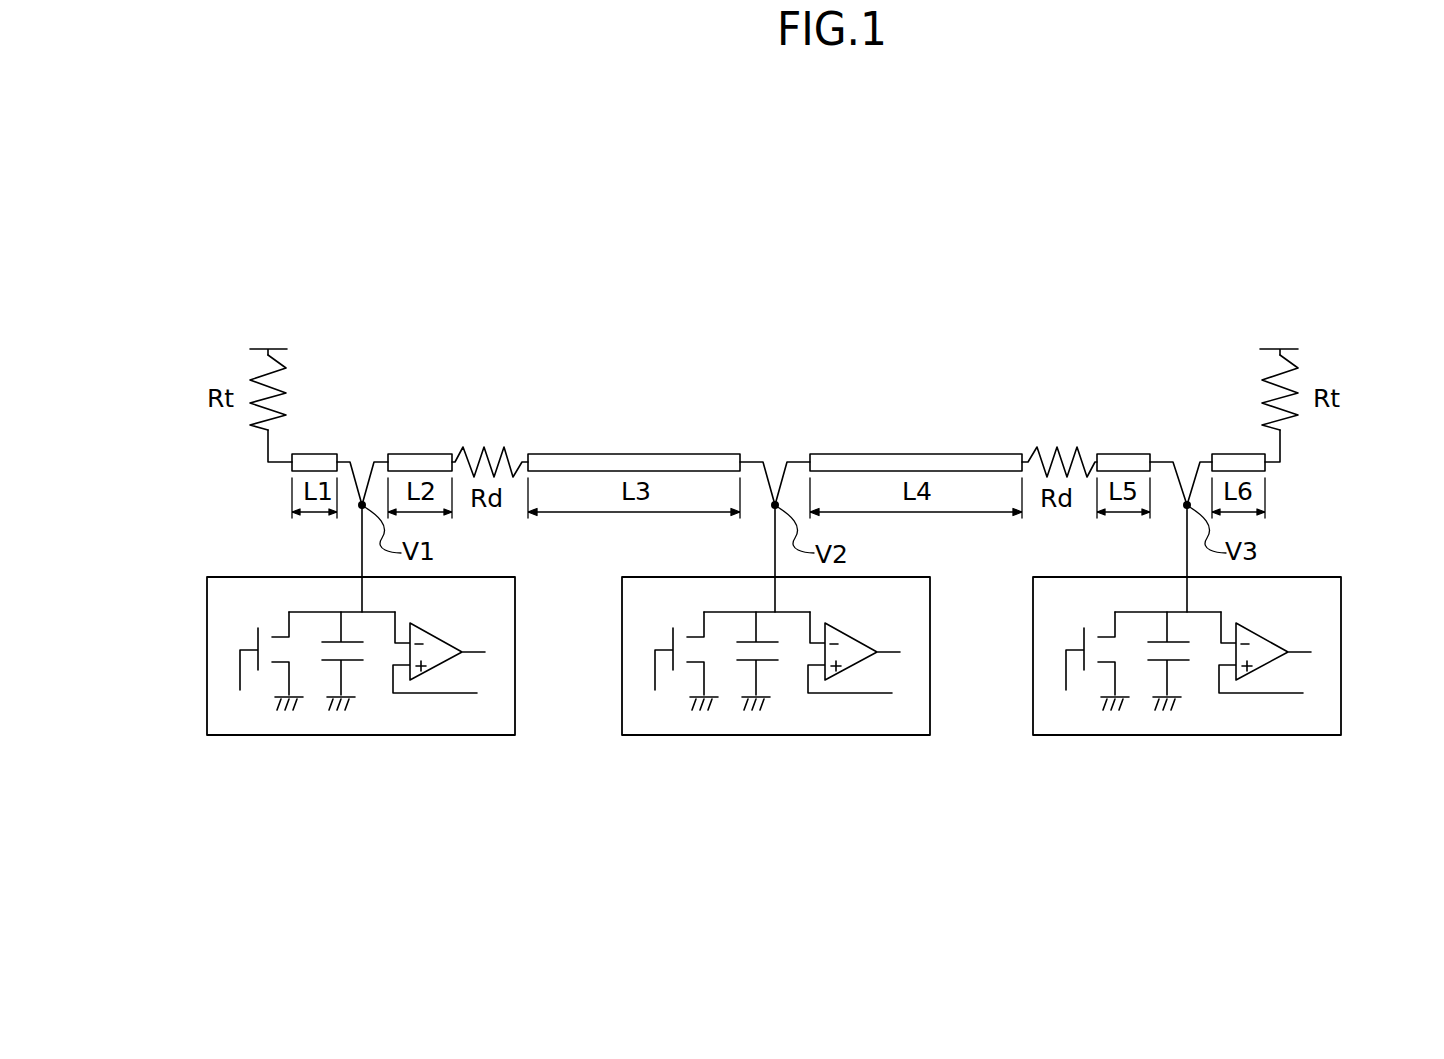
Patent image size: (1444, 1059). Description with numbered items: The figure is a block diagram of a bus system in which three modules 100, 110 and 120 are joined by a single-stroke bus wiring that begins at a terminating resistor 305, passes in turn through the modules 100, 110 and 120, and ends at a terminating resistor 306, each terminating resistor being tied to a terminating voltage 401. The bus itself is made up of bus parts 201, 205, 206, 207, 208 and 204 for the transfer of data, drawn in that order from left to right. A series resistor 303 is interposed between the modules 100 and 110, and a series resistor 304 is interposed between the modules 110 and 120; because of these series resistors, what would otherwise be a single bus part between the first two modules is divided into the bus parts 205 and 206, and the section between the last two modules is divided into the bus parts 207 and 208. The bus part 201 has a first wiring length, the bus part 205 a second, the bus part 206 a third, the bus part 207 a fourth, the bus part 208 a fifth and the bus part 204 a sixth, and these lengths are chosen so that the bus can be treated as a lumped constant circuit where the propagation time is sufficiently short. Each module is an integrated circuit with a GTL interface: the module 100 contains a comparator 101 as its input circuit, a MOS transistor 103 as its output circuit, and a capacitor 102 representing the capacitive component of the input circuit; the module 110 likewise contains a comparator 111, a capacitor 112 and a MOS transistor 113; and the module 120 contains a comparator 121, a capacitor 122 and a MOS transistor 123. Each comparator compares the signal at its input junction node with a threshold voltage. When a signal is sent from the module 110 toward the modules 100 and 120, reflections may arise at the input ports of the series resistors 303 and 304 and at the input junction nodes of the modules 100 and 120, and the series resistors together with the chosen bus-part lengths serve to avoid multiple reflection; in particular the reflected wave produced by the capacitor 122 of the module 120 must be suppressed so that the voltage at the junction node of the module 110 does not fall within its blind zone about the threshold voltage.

The module 100 is at (515, 620).
The module 110 is at (816, 691).
The module 120 is at (1229, 691).
The comparator 101 is at (430, 662).
The capacitor 102 is at (360, 663).
The MOS transistor 103 is at (300, 660).
The comparator 111 is at (854, 708).
The capacitor 112 is at (773, 708).
The MOS transistor 113 is at (695, 708).
The comparator 121 is at (1265, 708).
The capacitor 122 is at (1184, 708).
The MOS transistor 123 is at (1106, 708).
The bus part 201 is at (313, 454).
The bus part 204 is at (1233, 454).
The bus part 205 is at (397, 454).
The bus part 206 is at (640, 454).
The bus part 207 is at (862, 454).
The bus part 208 is at (1147, 454).
The series resistor Rd 303 is at (495, 447).
The series resistor Rd 304 is at (1045, 445).
The terminating resistor Rt 305 is at (256, 378).
The terminating resistor Rt 306 is at (1298, 381).
The terminating voltage Vtt 401 is at (338, 307).